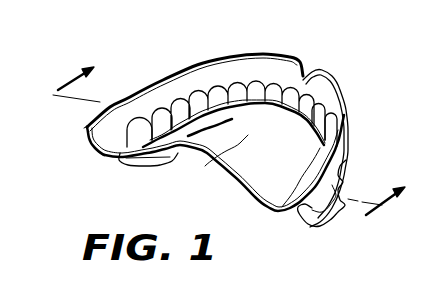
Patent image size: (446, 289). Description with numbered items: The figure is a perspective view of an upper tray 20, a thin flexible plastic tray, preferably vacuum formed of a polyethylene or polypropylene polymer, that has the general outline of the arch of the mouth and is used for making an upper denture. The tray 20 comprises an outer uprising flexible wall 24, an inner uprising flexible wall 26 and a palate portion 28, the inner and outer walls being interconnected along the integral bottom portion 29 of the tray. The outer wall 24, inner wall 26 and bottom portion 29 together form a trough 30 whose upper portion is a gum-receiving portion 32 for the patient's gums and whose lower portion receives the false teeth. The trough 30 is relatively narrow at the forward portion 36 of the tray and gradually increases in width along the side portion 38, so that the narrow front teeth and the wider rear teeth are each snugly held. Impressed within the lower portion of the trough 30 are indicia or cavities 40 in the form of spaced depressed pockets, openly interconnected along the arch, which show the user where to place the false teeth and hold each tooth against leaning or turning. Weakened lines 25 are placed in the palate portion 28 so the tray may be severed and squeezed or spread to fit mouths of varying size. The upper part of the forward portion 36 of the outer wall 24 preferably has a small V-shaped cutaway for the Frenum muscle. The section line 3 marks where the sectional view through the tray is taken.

The upper tray 20 is at (346, 77).
The outer uprising flexible wall 24 is at (90, 140).
The weakened lines 25 is at (225, 152).
The inner uprising flexible wall 26 is at (263, 203).
The palate portion 28 is at (238, 189).
The bottom portion 29 is at (113, 160).
The trough 30 is at (329, 134).
The gum-receiving portion 32 is at (136, 115).
The forward portion 36 is at (289, 68).
The side portion 38 is at (171, 108).
The indicia or cavities 40 is at (238, 83).
The section line 3— 3 is at (217, 149).